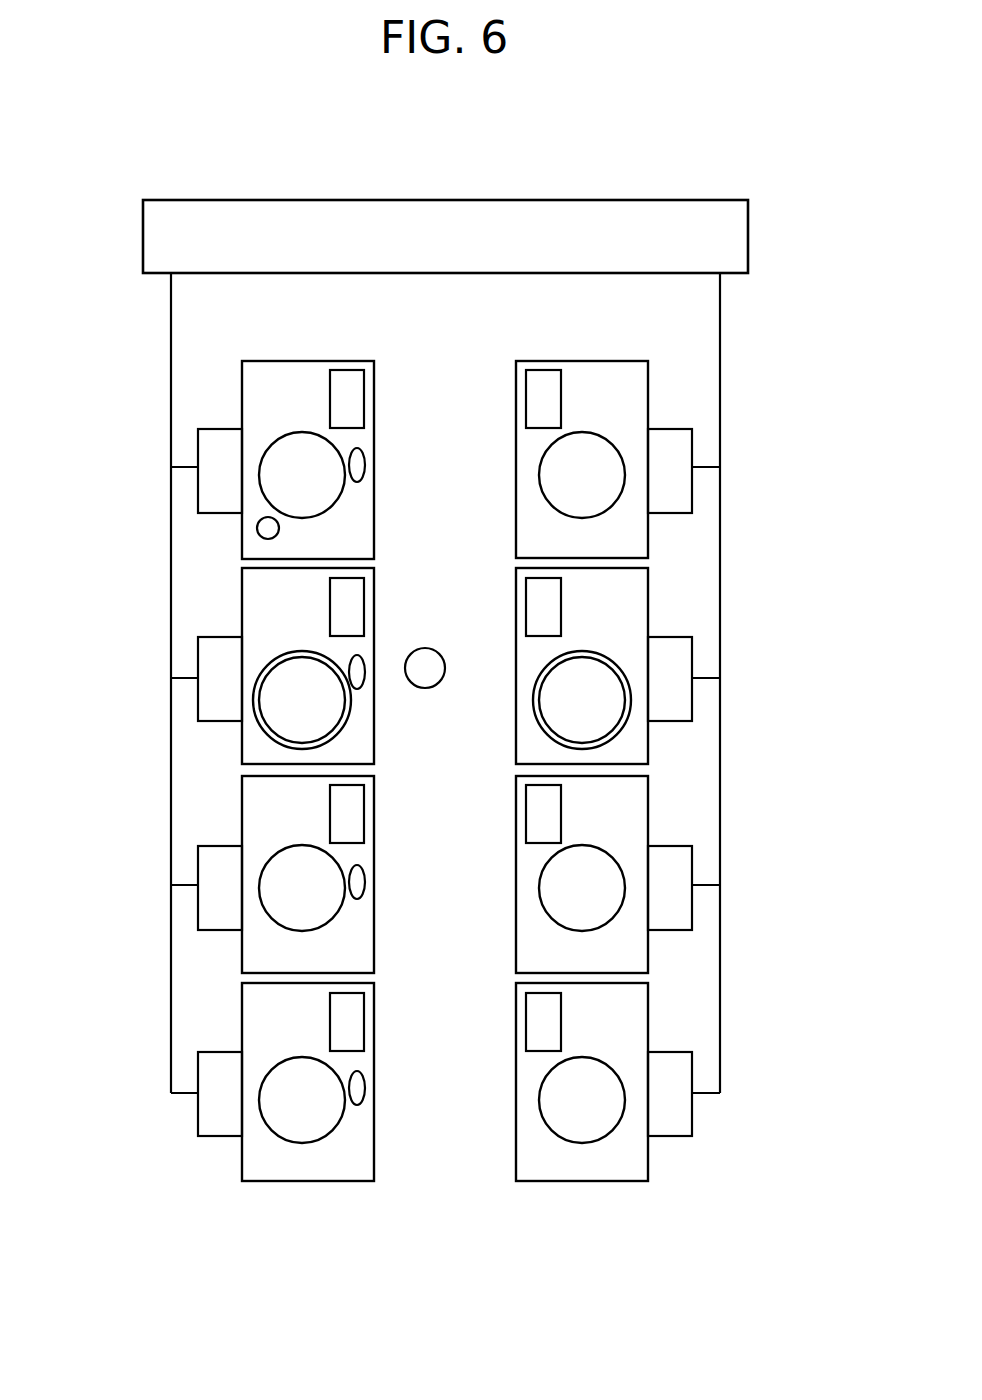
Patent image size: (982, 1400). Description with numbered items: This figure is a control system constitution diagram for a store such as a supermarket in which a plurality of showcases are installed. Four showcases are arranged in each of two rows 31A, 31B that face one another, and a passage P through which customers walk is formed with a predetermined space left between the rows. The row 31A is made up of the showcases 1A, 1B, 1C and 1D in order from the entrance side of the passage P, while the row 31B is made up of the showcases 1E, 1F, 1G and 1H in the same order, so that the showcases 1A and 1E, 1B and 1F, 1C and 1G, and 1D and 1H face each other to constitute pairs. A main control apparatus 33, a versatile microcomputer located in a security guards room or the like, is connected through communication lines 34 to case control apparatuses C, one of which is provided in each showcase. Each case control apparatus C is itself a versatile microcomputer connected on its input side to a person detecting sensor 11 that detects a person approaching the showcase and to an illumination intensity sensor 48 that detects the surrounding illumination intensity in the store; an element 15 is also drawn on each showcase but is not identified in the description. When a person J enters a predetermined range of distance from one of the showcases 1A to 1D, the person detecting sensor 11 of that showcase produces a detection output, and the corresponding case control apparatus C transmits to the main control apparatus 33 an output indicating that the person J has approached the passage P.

The main control apparatus 33 is at (378, 220).
The communication lines 34 is at (170, 312).
The row 31A is at (263, 839).
The row 31B is at (678, 839).
The showcase 1A is at (374, 445).
The showcase 1B is at (240, 745).
The showcase 1C is at (240, 955).
The showcase 1D is at (240, 1163).
The showcase 1E is at (648, 537).
The showcase 1F is at (648, 745).
The showcase 1G is at (648, 957).
The showcase 1H is at (648, 1163).
The flash unit 15 is at (357, 397).
The person detecting sensor 11 is at (360, 465).
The case control apparatus C is at (215, 458).
The illumination intensity sensor 48 is at (258, 532).
The person J is at (432, 664).
The passage P is at (490, 712).